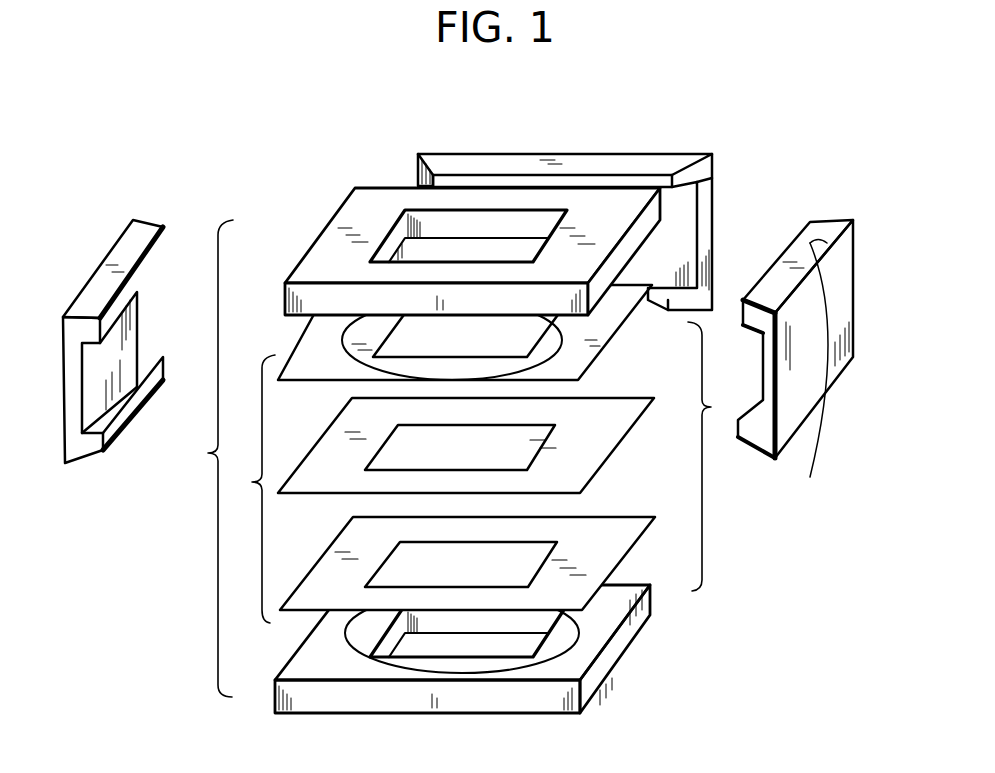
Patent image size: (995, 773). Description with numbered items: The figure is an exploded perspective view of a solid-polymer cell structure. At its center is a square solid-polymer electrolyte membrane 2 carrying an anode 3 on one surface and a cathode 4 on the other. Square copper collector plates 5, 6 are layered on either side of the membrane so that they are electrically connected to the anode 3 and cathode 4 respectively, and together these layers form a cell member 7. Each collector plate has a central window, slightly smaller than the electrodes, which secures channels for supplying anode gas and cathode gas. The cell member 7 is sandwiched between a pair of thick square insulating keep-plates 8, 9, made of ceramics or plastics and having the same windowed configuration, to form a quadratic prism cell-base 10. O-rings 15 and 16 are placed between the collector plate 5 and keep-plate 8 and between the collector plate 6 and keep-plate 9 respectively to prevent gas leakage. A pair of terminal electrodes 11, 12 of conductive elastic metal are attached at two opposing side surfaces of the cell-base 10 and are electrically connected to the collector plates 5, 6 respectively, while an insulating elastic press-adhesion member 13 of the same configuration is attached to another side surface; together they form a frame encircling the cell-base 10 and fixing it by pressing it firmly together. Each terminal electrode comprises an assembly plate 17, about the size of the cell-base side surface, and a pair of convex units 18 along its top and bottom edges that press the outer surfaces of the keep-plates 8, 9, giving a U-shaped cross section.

The solid-polymer electrolyte membrane 2 is at (587, 470).
The anode 3 is at (553, 433).
The cathode 4 is at (468, 452).
The collector plate 5 is at (610, 333).
The collector plate 6 is at (612, 557).
The cell member 7 is at (483, 472).
The insulating keep-plate 8 is at (318, 272).
The insulating keep-plate 9 is at (276, 672).
The cell-base 10 is at (204, 458).
The terminal electrode 11 is at (870, 266).
The terminal electrode 12 is at (83, 284).
The press-adhesion member 13 is at (574, 150).
The o-ring 15 is at (343, 327).
The o-ring 16 is at (347, 643).
The assembly plate 17 is at (827, 387).
The convex unit 18 is at (757, 445).